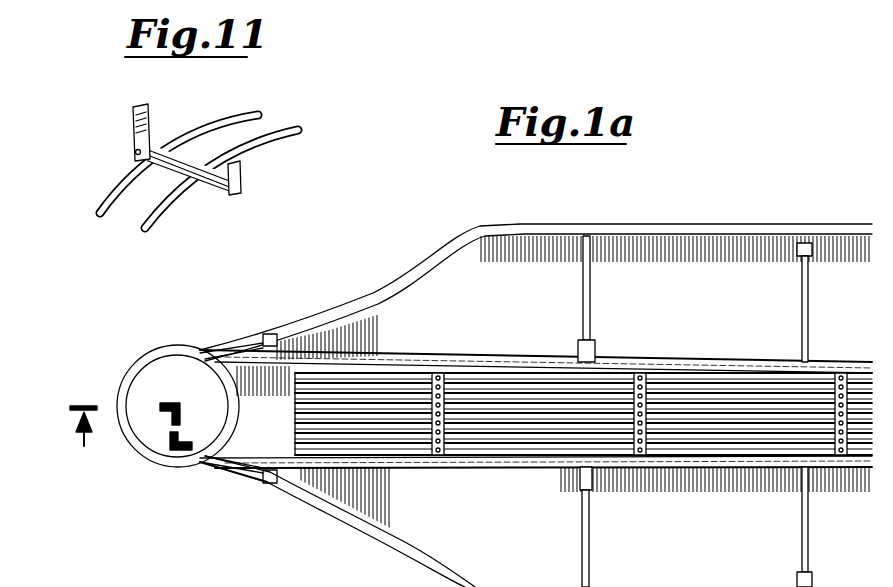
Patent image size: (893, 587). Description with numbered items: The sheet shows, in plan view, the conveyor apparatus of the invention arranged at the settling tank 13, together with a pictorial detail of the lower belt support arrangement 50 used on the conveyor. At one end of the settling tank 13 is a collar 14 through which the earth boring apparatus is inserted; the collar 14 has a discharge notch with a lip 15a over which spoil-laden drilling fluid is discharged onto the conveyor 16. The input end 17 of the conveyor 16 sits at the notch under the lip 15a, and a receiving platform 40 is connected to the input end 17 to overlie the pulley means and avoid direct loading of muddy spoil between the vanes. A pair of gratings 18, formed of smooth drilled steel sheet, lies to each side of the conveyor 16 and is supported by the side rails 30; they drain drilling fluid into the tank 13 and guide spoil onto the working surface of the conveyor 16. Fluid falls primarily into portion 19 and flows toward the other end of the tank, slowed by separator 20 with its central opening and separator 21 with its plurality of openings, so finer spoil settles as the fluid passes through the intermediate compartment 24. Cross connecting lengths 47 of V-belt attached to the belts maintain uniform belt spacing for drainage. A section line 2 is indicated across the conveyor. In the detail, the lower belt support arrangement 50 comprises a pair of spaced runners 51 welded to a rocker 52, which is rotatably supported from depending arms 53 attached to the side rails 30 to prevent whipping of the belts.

In FIG. 1A, the section line 2- 2 is at (83, 414).
In FIG. 1A, the settling tank 13 is at (660, 224).
In FIG. 1A, the collar 14 is at (128, 440).
In FIG. 1A, the lip 15a is at (232, 408).
In FIG. 1A, the conveyor 16 is at (682, 482).
In FIG. 1A, the input end 17 is at (237, 488).
In FIG. 1A, the gratings 18 is at (413, 355).
In FIG. 1A, the portion 19 is at (530, 525).
In FIG. 1A, the separator 20 is at (590, 300).
In FIG. 1A, the separator 21 is at (808, 305).
In FIG. 1A, the intermediate compartment 24 is at (657, 551).
In FIG. 1A, the side rails 30 is at (700, 362).
In FIG. 1A, the receiving platform 40 is at (248, 355).
In FIG. 1A, the cross connecting lengths 47 is at (640, 372).
In FIG. 11, the lower belt support arrangement 50 is at (100, 150).
In FIG. 11, the runners 51 is at (108, 197).
In FIG. 11, the rocker 52 is at (213, 193).
In FIG. 11, the depending arms 53 is at (133, 115).